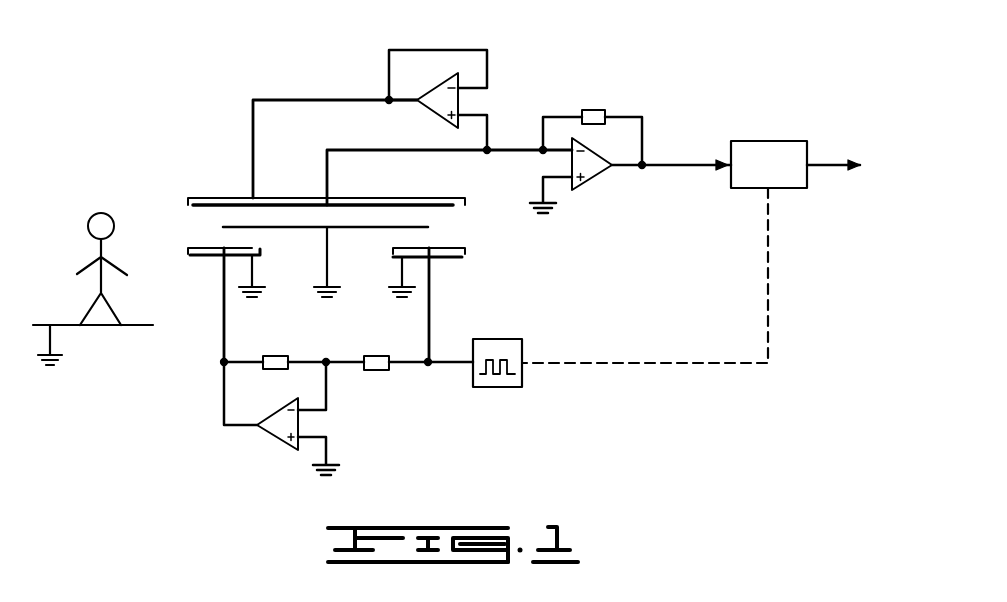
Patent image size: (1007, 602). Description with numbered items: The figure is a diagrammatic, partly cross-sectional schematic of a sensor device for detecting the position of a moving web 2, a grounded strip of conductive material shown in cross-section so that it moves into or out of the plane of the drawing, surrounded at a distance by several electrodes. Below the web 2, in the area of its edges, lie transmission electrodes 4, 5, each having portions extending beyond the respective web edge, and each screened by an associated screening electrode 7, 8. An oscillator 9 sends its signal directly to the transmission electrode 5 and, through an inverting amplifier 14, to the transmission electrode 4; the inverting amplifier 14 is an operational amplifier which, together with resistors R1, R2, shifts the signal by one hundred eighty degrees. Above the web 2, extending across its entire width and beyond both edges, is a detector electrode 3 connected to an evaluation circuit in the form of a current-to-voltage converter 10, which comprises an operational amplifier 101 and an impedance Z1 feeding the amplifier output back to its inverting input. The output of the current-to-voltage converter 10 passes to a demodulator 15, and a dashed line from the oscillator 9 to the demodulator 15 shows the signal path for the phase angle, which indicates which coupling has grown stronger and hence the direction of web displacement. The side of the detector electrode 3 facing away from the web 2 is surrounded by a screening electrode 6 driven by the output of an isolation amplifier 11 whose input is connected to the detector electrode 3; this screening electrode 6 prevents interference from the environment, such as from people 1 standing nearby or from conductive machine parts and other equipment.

The people 1 is at (90, 245).
The web 2 is at (315, 228).
The detector electrode 3 is at (450, 207).
The transmission electrode 4 is at (200, 248).
The transmission electrode 5 is at (452, 250).
The screening electrode 6 is at (412, 196).
The screening electrode 7 is at (197, 262).
The screening electrode 8 is at (450, 258).
The oscillator 9 is at (510, 337).
The current-to-voltage converter 10 is at (630, 147).
The operational amplifier 101 is at (588, 168).
The isolation amplifier 11 is at (443, 101).
The inverting amplifier 14 is at (277, 427).
The demodulator 15 is at (765, 160).
The resistor R1 is at (275, 351).
The resistor R2 is at (375, 351).
The impedance Z1 is at (591, 105).